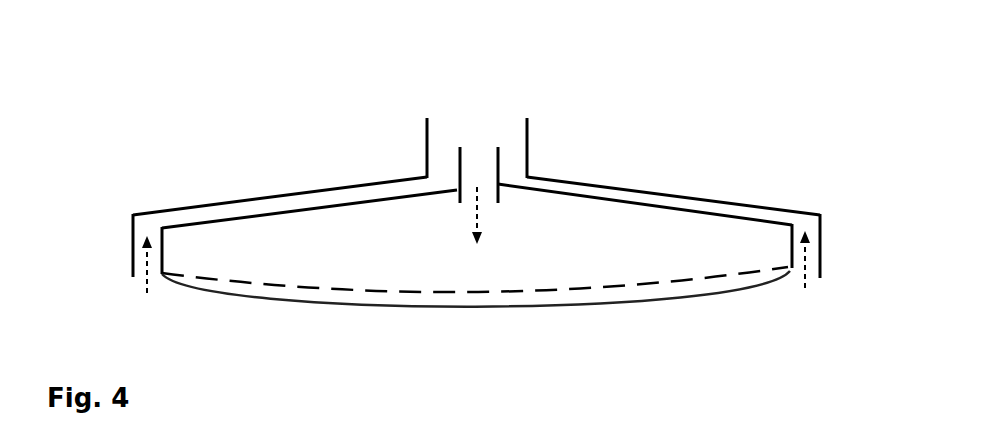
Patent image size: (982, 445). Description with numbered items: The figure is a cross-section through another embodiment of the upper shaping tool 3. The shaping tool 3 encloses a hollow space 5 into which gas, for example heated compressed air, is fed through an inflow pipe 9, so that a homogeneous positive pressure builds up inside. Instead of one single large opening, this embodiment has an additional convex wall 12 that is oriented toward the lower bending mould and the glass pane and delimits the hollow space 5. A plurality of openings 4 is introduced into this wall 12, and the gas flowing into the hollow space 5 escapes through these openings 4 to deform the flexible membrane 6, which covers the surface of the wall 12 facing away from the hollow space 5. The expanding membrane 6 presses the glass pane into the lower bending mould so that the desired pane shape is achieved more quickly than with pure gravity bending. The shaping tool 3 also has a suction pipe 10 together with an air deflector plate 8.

The upper shaping tool 3 is at (694, 152).
The openings 4 is at (238, 277).
The hollow space 5 is at (295, 235).
The flexible membrane 6 is at (737, 298).
The air deflector plate 8 is at (140, 212).
The inflow pipe 9 is at (487, 168).
The suction pipe 10 is at (438, 155).
The convex wall 12 is at (357, 285).